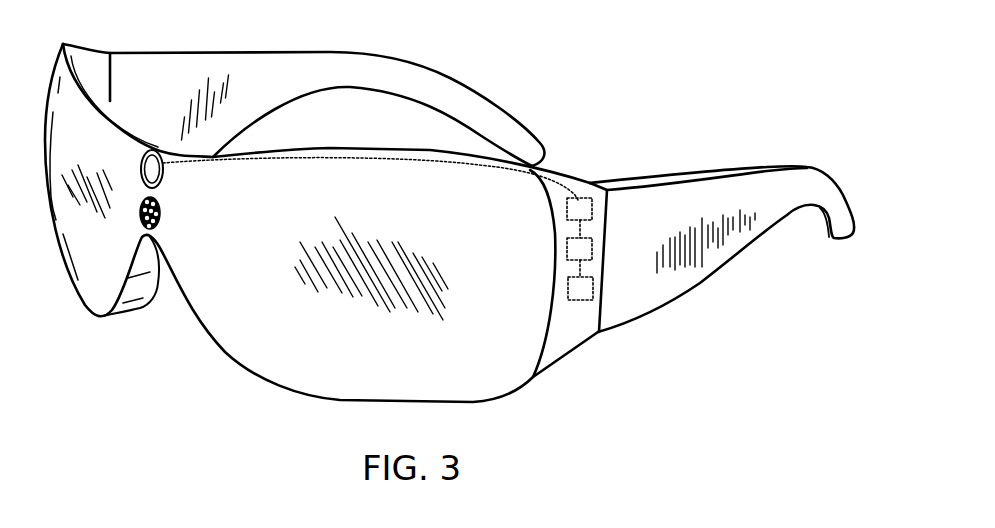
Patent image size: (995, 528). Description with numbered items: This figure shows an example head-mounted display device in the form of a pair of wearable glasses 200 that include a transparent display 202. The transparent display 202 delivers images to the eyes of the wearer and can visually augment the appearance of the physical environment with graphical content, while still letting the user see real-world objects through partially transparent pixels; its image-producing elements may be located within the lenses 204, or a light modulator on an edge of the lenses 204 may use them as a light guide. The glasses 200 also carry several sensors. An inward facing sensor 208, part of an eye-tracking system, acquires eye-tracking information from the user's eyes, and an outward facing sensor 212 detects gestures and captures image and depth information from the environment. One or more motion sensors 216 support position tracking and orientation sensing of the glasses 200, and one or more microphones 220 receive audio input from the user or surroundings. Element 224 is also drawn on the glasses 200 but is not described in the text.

The wearable glasses 200 is at (113, 394).
The transparent display 202 is at (247, 341).
The lenses 204 is at (93, 283).
The inward facing sensor 208 is at (165, 221).
The outward facing sensor 212 is at (172, 174).
The motion sensors 216 is at (580, 197).
The microphones 220 is at (595, 245).
The electronics component 224 is at (595, 287).